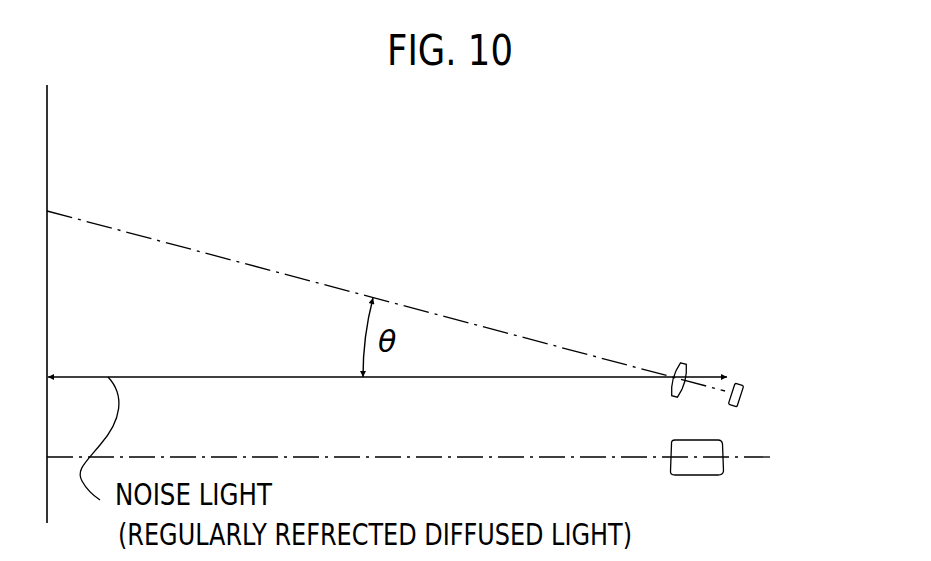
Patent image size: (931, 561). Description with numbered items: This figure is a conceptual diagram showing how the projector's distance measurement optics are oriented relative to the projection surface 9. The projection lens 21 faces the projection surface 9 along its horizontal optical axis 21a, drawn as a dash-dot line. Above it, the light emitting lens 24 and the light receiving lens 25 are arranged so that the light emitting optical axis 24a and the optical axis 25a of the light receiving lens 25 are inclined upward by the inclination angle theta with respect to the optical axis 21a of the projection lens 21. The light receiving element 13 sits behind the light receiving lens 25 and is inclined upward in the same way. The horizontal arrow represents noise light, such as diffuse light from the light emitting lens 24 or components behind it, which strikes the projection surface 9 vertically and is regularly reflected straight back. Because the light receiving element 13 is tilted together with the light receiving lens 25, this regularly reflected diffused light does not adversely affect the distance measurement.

The projection surface 9 is at (47, 313).
The light emitting optical axis 24a is at (386, 280).
The optical axis of the light receiving lens 25a is at (192, 248).
The light emitting lens 24 is at (693, 344).
The light receiving lens 25 is at (682, 363).
The optical axis of the projection lens 21a is at (400, 457).
The light receiving element 13 is at (743, 390).
The projection lens 21 is at (722, 470).